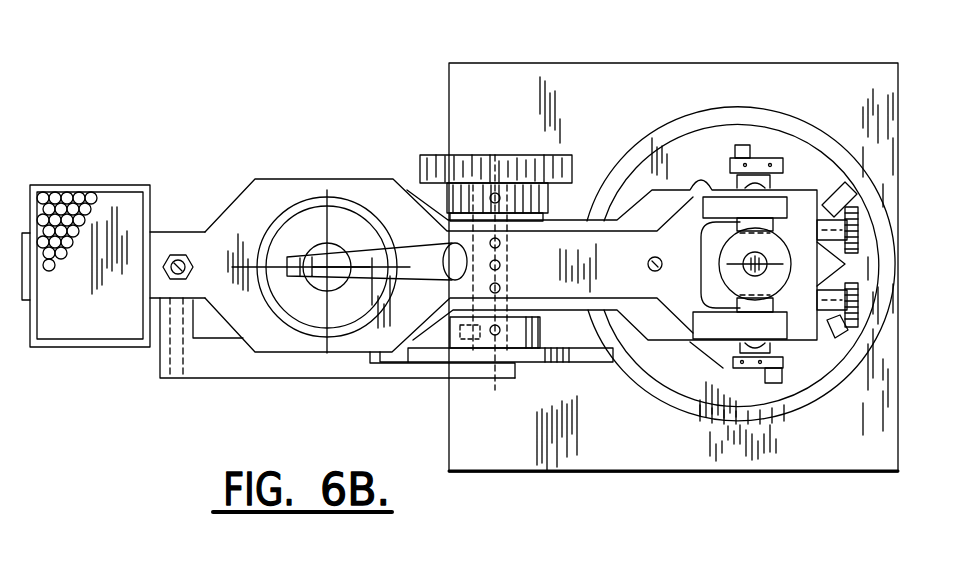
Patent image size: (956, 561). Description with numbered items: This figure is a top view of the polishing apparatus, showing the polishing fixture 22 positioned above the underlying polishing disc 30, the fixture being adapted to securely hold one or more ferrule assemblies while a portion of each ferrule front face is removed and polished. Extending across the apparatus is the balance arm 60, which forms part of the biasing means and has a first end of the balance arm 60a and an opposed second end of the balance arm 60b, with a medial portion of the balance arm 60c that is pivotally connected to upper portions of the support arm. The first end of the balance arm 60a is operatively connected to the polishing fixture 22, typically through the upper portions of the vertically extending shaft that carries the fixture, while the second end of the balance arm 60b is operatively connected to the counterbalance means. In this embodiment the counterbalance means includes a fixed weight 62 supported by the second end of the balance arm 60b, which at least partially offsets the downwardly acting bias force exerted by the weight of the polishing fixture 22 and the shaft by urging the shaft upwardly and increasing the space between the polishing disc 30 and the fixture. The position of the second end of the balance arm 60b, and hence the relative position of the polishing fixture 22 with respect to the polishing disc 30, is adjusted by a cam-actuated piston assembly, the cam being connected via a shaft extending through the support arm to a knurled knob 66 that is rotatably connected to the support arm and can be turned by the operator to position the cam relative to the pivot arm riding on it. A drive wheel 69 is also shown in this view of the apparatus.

The polishing fixture 22 is at (802, 173).
The polishing disc 30 is at (677, 403).
The balance arm 60 is at (630, 270).
The first end of the balance arm 60a is at (727, 207).
The second end of the balance arm 60b is at (162, 243).
The medial portion of the balance arm 60c is at (505, 265).
The fixed weight 62 is at (128, 200).
The knurled knob 66 is at (550, 355).
The drive wheel 69 is at (485, 165).